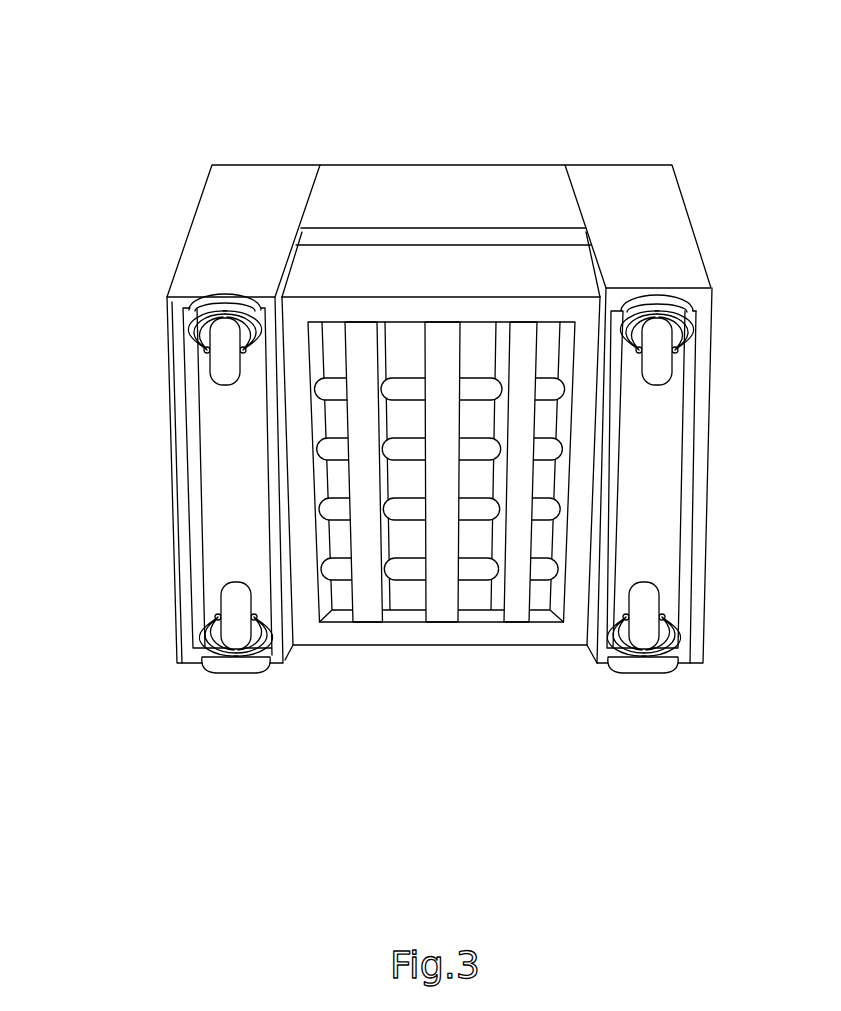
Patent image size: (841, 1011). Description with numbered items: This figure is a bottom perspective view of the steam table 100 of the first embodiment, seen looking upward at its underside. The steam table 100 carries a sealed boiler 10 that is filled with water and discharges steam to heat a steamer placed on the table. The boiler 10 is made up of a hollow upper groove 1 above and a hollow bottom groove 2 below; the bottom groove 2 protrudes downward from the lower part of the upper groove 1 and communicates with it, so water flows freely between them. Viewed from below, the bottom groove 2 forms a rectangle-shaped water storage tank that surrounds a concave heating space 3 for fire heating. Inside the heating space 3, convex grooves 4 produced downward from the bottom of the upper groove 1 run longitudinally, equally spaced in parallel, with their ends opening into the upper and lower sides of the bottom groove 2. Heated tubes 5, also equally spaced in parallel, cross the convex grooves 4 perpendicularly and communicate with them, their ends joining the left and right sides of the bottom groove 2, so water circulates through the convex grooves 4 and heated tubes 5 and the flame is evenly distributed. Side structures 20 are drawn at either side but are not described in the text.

The steam table 100 is at (645, 103).
The boiler 10 is at (441, 346).
The upper groove 1 is at (503, 187).
The bottom groove 2 is at (472, 265).
The side wheel unit 20 is at (222, 183).
The heating space 3 is at (547, 545).
The convex groove 4 is at (365, 608).
The heated tube 5 is at (407, 568).